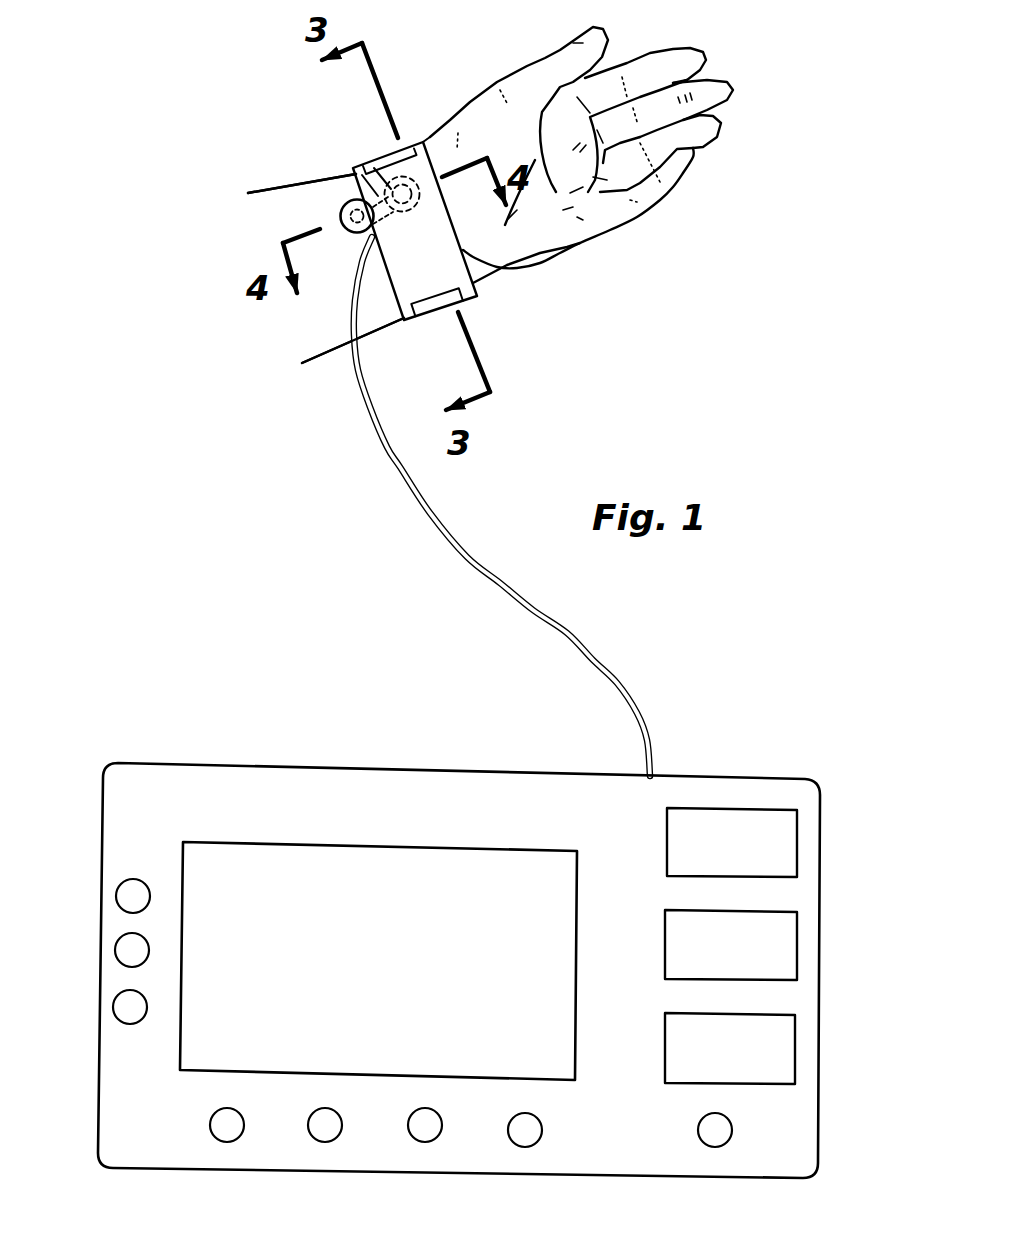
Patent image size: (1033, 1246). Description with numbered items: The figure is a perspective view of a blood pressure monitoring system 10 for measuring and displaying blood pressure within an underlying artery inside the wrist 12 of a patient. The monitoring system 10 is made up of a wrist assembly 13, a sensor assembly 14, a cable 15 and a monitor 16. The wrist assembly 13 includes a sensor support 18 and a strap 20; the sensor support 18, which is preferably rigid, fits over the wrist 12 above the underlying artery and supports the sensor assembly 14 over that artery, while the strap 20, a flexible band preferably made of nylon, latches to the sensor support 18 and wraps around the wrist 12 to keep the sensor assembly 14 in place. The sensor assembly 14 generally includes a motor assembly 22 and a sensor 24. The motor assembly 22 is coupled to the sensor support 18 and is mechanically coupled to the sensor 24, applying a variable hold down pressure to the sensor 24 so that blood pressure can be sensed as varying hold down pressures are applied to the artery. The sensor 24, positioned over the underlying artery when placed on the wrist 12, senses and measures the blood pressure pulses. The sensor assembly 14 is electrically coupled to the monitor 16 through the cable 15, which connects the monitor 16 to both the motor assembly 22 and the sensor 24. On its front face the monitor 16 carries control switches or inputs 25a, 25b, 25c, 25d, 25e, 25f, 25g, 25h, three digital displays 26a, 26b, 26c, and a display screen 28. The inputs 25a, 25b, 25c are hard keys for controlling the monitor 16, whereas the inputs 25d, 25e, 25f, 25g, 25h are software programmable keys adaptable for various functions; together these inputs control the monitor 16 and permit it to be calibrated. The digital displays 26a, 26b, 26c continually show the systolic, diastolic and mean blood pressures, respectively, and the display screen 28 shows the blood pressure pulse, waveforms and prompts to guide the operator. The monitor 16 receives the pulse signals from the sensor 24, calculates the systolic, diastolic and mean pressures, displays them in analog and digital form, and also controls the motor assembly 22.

The blood pressure monitoring system 10 is at (195, 66).
The wrist 12 is at (398, 322).
The wrist assembly 13 is at (433, 137).
The sensor assembly 14 is at (338, 203).
The cable 15 is at (375, 428).
The monitor 16 is at (229, 762).
The sensor support 18 is at (460, 247).
The strap 20 is at (382, 160).
The motor assembly 22 is at (351, 235).
The sensor 24 is at (378, 190).
The input 25a is at (125, 878).
The input 25b is at (120, 940).
The input 25c is at (120, 1003).
The input 25d is at (218, 1143).
The input 25e is at (320, 1141).
The input 25f is at (418, 1143).
The input 25g is at (527, 1147).
The input 25h is at (713, 1148).
The digital display 26a is at (772, 830).
The digital display 26b is at (767, 934).
The digital display 26c is at (772, 1050).
The display screen 28 is at (505, 873).